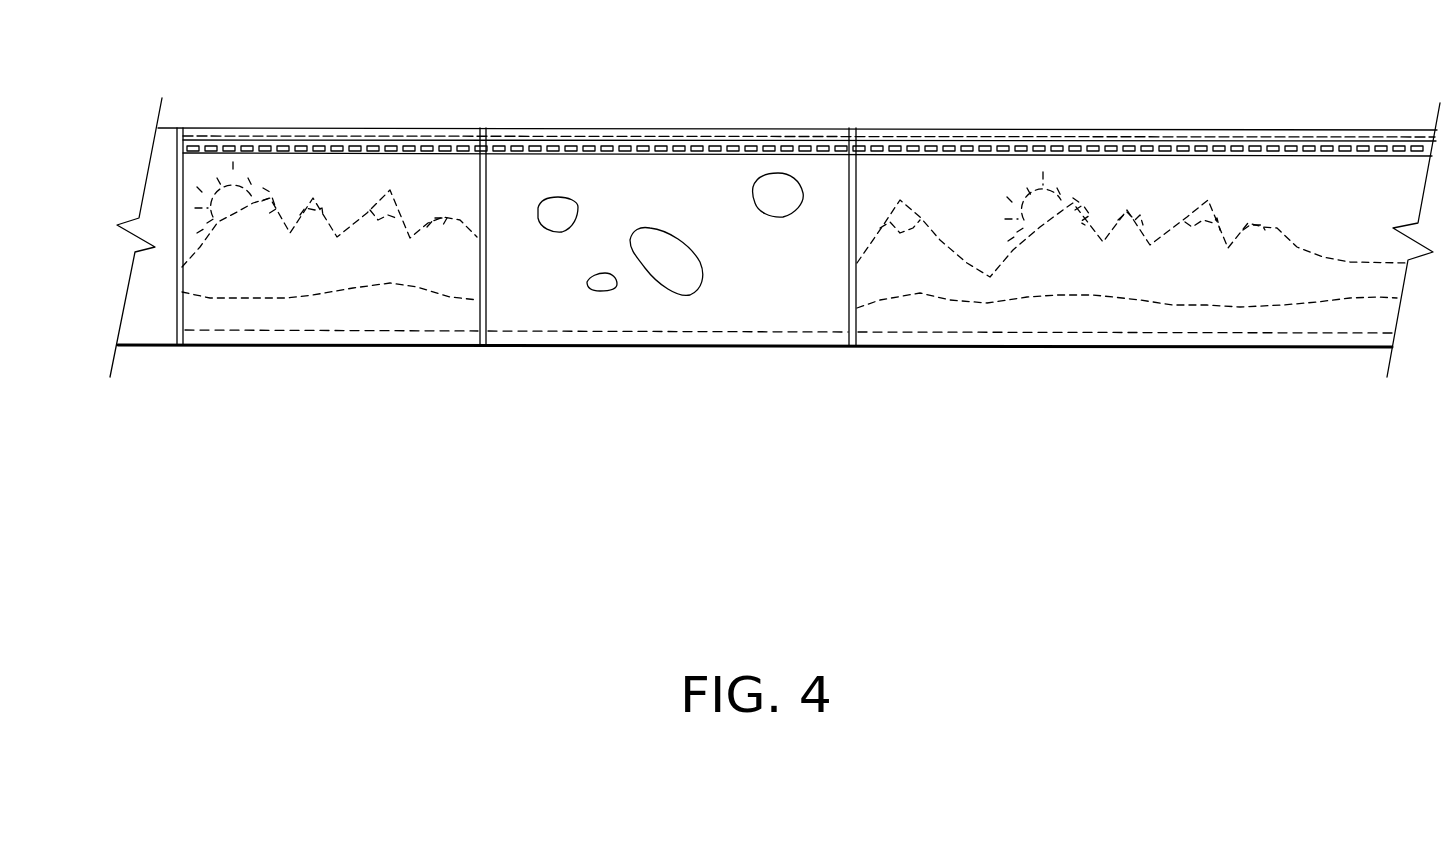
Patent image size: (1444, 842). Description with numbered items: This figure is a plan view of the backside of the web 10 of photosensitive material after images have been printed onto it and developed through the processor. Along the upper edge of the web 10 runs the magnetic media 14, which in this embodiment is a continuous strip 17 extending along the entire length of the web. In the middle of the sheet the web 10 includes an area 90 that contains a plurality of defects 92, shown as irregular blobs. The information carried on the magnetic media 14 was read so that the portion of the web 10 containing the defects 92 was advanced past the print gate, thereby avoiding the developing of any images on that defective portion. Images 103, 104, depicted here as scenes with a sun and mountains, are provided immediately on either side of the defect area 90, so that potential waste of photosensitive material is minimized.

The web 10 is at (880, 107).
The magnetic media 14 is at (1030, 143).
The continuous strip 17 is at (1143, 140).
The area 90 is at (725, 310).
The defects 92 is at (766, 172).
The image 103 is at (1095, 321).
The image 104 is at (322, 320).